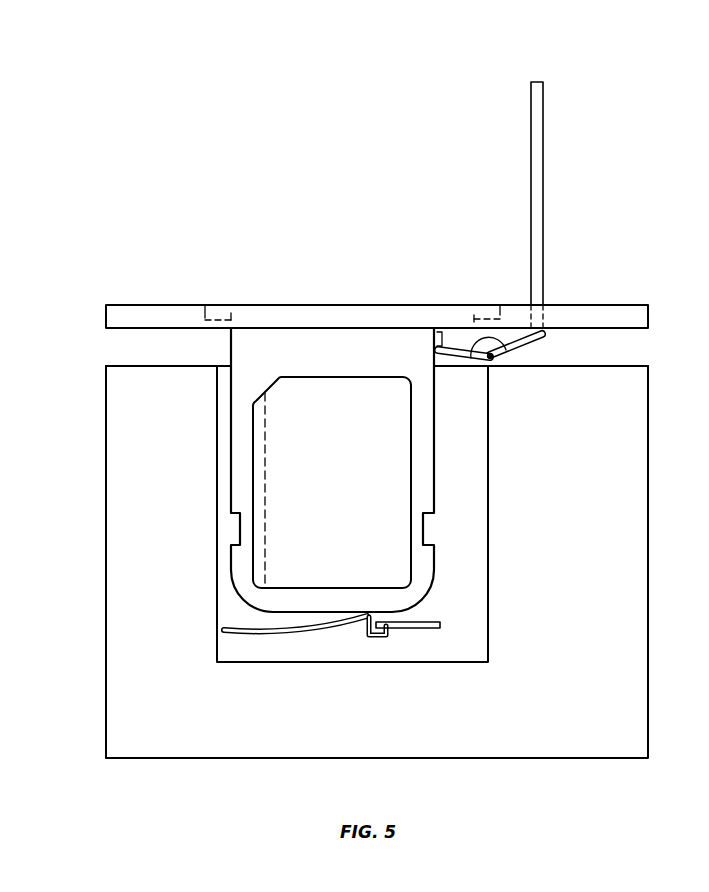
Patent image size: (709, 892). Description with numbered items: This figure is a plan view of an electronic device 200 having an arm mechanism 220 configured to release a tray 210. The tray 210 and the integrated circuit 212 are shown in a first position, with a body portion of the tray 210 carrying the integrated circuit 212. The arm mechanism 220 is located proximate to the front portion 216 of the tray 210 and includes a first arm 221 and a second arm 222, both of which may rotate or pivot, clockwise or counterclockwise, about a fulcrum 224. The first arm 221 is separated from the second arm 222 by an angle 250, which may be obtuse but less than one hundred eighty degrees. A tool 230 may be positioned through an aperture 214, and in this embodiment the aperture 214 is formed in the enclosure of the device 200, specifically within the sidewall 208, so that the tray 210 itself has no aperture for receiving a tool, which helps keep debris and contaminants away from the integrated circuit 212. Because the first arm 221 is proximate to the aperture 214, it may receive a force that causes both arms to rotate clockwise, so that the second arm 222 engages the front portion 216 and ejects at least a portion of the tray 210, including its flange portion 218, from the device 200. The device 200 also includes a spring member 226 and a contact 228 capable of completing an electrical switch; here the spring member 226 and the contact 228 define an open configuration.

The electronic device 200 is at (238, 100).
The sidewall 208 is at (596, 305).
The tray 210 is at (231, 355).
The integrated circuit 212 is at (332, 482).
The aperture 214 is at (552, 288).
The front portion 216 is at (272, 290).
The flange portion 218 is at (441, 284).
The arm mechanism 220 is at (552, 354).
The first arm 221 is at (524, 330).
The second arm 222 is at (438, 336).
The fulcrum 224 is at (494, 355).
The spring member 226 is at (300, 634).
The contact 228 is at (420, 628).
The tool 230 is at (531, 134).
The angle 250 is at (488, 340).